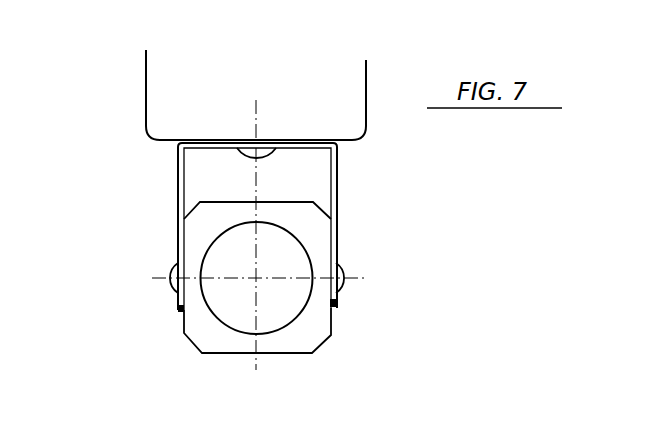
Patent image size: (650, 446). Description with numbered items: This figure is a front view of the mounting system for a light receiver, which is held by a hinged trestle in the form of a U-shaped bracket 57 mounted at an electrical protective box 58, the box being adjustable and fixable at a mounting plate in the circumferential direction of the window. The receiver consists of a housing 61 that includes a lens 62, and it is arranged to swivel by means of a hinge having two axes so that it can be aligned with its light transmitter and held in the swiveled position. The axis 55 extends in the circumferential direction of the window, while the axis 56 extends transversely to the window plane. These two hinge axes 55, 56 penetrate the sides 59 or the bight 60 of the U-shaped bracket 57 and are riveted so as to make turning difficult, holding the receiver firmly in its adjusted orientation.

The hinge axis 55 is at (247, 116).
The hinge axis 56 is at (166, 272).
The U-shaped bracket 57 is at (180, 165).
The electrical protective box 58 is at (210, 118).
The sides 59 is at (178, 309).
The bight 60 is at (295, 145).
The housing 61 is at (310, 327).
The lens 62 is at (238, 310).